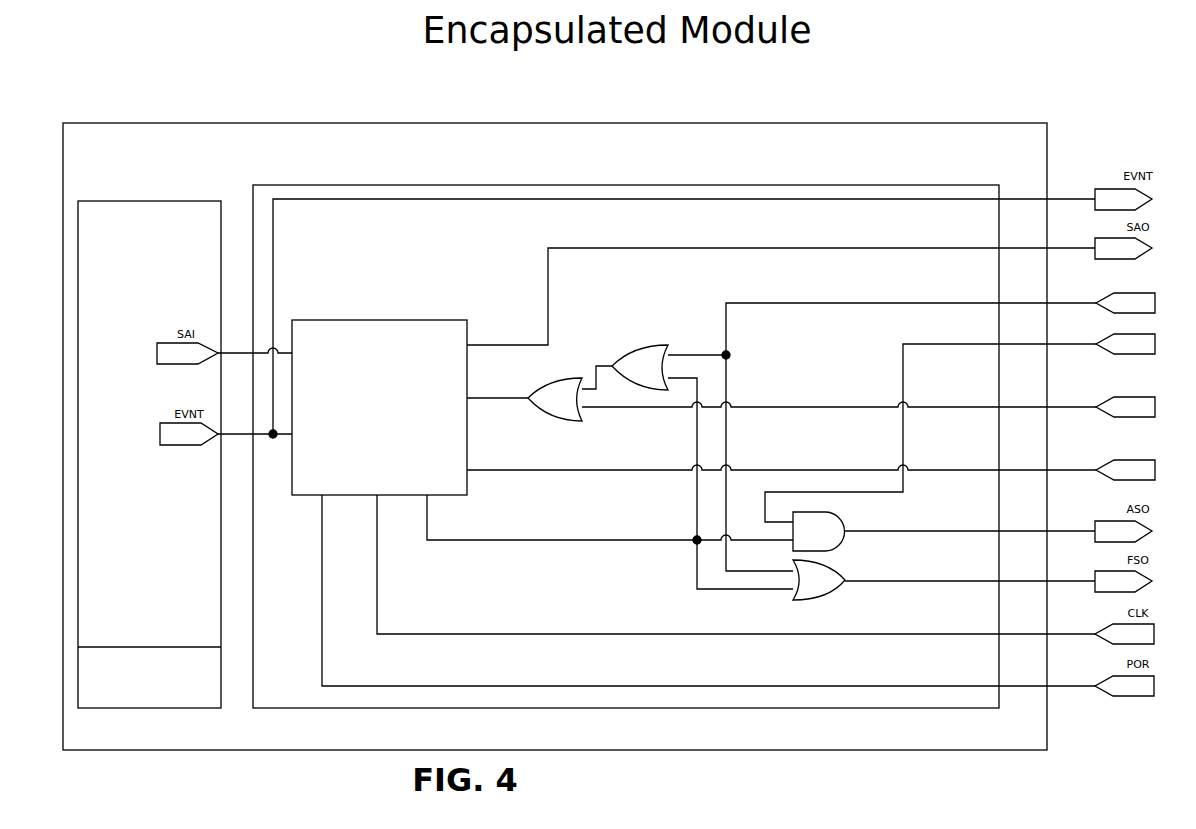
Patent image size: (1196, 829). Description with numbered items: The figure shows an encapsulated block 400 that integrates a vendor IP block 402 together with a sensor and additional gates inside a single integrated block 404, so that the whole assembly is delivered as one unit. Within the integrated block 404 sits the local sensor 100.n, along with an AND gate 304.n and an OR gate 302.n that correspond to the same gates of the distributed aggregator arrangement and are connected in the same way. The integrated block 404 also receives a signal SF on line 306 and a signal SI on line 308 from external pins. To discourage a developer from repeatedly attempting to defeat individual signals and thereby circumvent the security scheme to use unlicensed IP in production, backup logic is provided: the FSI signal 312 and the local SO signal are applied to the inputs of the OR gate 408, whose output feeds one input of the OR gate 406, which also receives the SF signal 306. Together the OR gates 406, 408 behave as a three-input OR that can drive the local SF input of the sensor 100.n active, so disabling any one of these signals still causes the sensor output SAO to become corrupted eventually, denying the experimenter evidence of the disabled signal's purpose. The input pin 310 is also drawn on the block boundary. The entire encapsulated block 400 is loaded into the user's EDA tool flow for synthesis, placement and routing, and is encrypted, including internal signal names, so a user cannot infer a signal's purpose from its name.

The encapsulated block 400 is at (1044, 94).
The IP block 402 is at (116, 200).
The integrated block 404 is at (485, 184).
The local sensor 100.n is at (382, 318).
The OR gate 406 is at (574, 377).
The OR gate 408 is at (654, 343).
The AND gate 304.n is at (843, 545).
The OR gate 302.n is at (831, 597).
The SF signal line 306 is at (1114, 397).
The SI signal line 308 is at (1114, 460).
The ASI input pin 310 is at (1114, 334).
The FSI signal 312 is at (1111, 292).